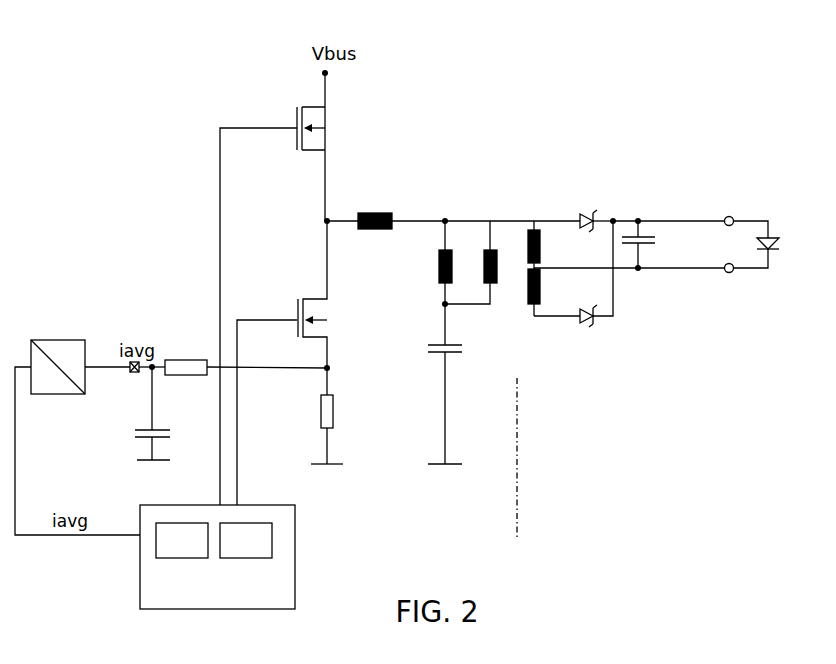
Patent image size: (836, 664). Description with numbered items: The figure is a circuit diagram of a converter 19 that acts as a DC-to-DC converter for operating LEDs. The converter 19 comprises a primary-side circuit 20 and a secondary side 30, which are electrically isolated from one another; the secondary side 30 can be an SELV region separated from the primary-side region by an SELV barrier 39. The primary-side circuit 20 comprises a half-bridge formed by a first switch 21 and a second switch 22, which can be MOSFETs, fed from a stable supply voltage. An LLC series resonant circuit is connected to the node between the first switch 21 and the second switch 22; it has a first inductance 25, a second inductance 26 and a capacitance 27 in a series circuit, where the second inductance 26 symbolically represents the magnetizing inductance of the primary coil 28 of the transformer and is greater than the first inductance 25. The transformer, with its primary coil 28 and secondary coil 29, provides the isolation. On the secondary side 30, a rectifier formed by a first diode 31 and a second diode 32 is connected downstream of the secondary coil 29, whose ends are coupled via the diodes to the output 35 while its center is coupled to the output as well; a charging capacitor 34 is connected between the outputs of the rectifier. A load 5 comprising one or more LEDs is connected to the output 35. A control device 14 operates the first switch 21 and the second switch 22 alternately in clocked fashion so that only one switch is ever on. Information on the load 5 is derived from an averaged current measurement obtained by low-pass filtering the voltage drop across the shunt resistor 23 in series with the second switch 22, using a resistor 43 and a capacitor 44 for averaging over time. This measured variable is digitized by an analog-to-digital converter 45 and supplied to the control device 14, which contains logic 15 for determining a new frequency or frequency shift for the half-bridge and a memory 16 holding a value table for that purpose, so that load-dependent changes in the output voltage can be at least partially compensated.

The converter 19 is at (97, 70).
The primary-side circuit 20 is at (233, 102).
The first switch 21 is at (295, 107).
The second switch 22 is at (292, 298).
The shunt resistor 23 is at (320, 410).
The first inductance 25 is at (375, 212).
The second inductance 26 is at (440, 268).
The capacitance 27 is at (428, 342).
The primary coil 28 is at (498, 287).
The secondary coil 29 is at (525, 220).
The secondary side 30 is at (545, 95).
The first diode 31 is at (586, 212).
The second diode 32 is at (590, 325).
The charging capacitor 34 is at (657, 245).
The output 35 is at (731, 216).
The load 5 is at (776, 240).
The SELV barrier 39 is at (518, 520).
The resistor 43 is at (199, 377).
The capacitor 44 is at (135, 428).
The analog-to-digital converter 45 is at (53, 396).
The control device 14 is at (208, 604).
The logic 15 is at (173, 556).
The memory 16 is at (237, 556).